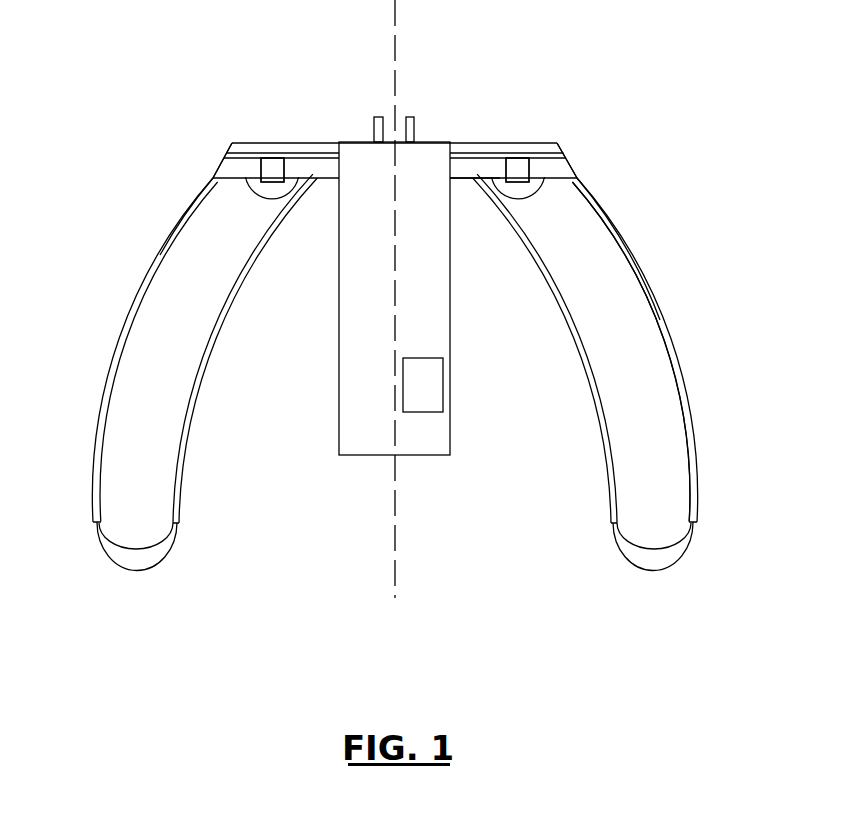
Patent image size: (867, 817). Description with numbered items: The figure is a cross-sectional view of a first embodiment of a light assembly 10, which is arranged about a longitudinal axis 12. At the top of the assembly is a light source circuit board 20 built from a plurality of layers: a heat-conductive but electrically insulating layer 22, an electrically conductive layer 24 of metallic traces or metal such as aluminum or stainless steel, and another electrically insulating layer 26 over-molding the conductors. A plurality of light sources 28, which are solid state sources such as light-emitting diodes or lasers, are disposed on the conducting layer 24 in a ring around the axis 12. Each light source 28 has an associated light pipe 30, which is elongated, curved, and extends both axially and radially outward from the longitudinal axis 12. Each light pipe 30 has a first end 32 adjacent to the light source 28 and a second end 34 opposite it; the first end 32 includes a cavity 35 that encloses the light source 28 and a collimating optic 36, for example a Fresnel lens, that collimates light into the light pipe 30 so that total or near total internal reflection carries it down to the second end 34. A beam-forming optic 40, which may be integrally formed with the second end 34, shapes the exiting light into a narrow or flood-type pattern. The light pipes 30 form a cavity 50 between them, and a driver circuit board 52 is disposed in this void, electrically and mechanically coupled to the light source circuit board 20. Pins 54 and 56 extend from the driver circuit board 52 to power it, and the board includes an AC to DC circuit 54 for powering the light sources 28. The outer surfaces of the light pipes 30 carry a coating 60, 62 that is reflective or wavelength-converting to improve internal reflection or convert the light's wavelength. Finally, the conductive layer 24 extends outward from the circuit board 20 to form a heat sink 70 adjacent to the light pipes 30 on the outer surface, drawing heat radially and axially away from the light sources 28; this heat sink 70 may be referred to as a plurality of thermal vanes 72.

The light assembly 10 is at (636, 82).
The longitudinal axis 12 is at (397, 35).
The light source circuit board 20 is at (559, 143).
The insulating layer 22 is at (527, 150).
The conductive layer 24 is at (471, 157).
The electrically insulating layer 26 is at (463, 180).
The light source 28 is at (270, 170).
The light pipe 30 is at (400, 332).
The first end 32 is at (218, 193).
The second end 34 is at (147, 528).
The cavity 35 is at (272, 158).
The collimating optic 36 is at (268, 197).
The beam-forming optic 40 is at (150, 570).
The cavity 50 is at (563, 512).
The driver circuit board 52 is at (358, 457).
The pin / AC to DC circuit 54 is at (378, 117).
The pin 56 is at (411, 117).
The coating 60 is at (198, 388).
The coating 62 is at (97, 473).
The heat sink 70 is at (634, 216).
The thermal vanes 72 is at (654, 290).